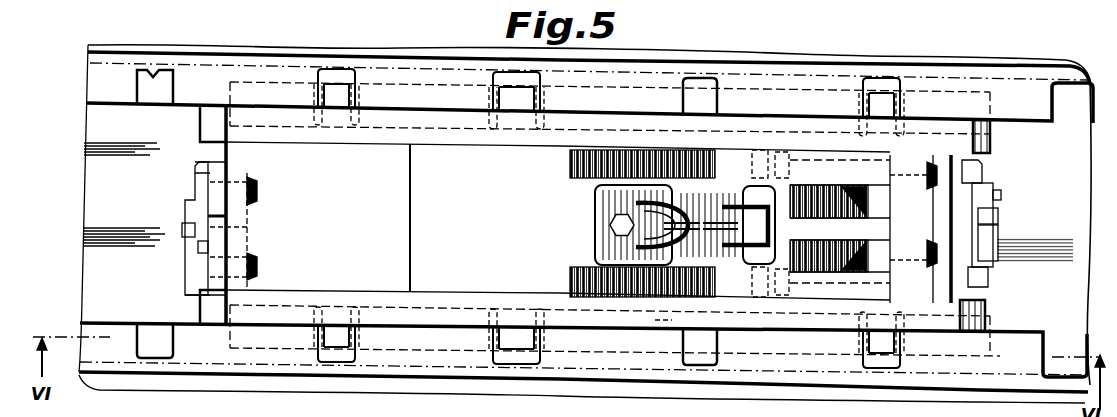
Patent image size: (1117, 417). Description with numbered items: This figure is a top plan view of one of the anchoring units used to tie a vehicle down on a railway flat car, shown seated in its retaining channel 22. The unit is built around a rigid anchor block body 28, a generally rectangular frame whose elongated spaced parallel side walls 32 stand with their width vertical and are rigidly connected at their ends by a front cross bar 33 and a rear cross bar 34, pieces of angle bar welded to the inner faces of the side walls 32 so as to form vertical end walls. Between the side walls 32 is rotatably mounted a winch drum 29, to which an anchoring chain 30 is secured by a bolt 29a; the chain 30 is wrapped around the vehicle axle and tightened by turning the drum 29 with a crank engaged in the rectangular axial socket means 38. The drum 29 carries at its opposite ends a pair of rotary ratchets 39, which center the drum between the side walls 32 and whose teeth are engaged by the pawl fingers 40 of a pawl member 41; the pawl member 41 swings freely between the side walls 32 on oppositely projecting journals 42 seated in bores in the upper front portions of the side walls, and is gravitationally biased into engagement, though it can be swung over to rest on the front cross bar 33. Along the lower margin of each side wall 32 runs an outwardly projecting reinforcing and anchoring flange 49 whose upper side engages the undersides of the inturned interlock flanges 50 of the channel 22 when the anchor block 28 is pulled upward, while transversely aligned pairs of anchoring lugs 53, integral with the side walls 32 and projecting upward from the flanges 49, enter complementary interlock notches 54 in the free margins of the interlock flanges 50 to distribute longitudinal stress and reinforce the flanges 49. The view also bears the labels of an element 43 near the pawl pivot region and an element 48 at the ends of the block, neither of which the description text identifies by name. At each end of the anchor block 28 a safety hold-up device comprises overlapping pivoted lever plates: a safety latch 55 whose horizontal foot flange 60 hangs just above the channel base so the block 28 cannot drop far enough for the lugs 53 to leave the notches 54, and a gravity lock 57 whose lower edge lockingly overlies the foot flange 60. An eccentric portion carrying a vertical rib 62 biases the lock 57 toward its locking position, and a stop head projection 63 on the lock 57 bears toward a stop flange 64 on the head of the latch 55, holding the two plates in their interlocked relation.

The retaining channel 22 is at (240, 377).
The anchor block body 28 is at (478, 315).
The winch drum 29 is at (600, 252).
The bolt 29a is at (611, 226).
The anchoring chain 30 is at (705, 222).
The side wall 32 is at (475, 150).
The front cross bar 33 is at (940, 288).
The rear cross bar 34 is at (397, 231).
The axial socket means 38 is at (662, 322).
The rotary ratchet 39 is at (570, 162).
The pawl finger 40 is at (757, 223).
The pawl member 41 is at (893, 252).
The journal 42 is at (843, 128).
The slide 43 is at (816, 127).
The block 48 is at (200, 121).
The reinforcing and anchoring flange 49 is at (690, 97).
The interlock flange 50 is at (1035, 112).
The anchoring lug 53 is at (350, 102).
The interlock notch 54 is at (153, 70).
The safety latch 55 is at (240, 242).
The gravity lock 57 is at (203, 162).
The foot flange 60 is at (185, 287).
The rib 62 is at (184, 231).
The stop head projection 63 is at (1010, 232).
The stop flange 64 is at (198, 247).